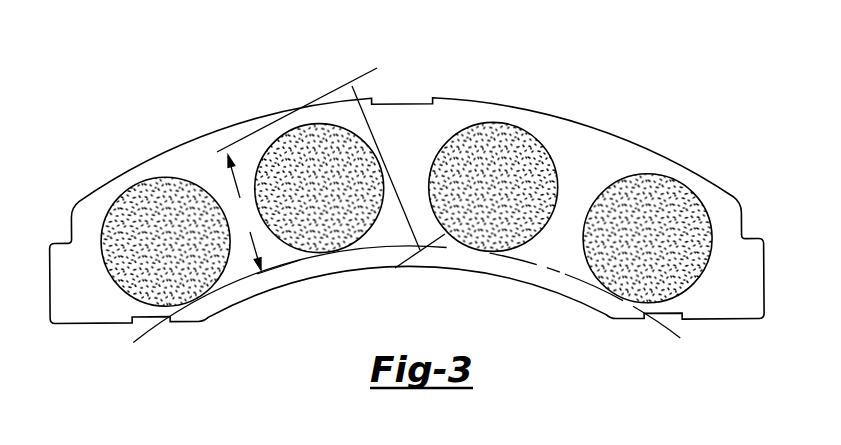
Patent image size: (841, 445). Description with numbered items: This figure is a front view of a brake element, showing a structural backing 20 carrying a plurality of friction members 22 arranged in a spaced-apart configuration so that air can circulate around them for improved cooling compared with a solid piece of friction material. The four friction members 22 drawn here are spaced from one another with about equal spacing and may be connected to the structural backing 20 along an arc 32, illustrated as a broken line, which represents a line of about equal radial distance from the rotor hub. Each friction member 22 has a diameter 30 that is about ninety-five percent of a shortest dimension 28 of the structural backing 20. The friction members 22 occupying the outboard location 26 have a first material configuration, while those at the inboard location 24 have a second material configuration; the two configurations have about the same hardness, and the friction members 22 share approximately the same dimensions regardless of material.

The structural backing 20 is at (452, 107).
The friction members 22 is at (400, 189).
The inboard location 24 is at (320, 123).
The outboard location 26 is at (112, 204).
The shortest dimension 28 is at (372, 136).
The diameter 30 is at (264, 214).
The arc 32 is at (662, 339).